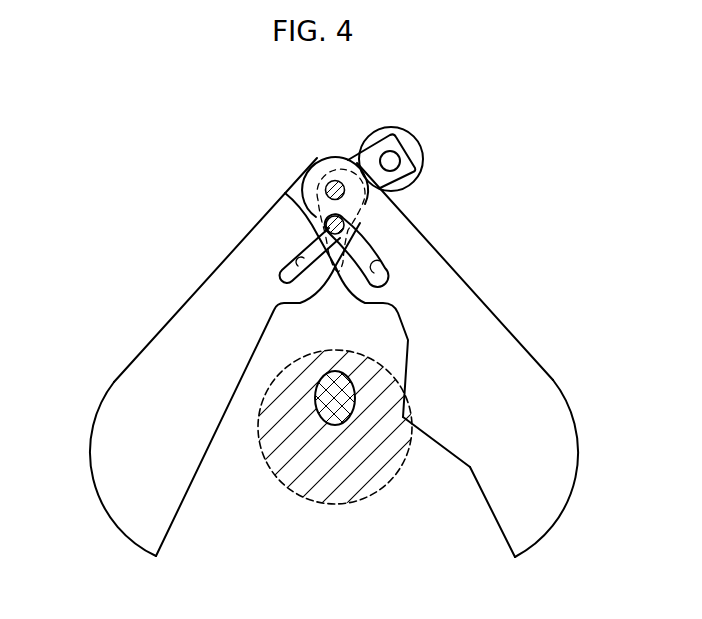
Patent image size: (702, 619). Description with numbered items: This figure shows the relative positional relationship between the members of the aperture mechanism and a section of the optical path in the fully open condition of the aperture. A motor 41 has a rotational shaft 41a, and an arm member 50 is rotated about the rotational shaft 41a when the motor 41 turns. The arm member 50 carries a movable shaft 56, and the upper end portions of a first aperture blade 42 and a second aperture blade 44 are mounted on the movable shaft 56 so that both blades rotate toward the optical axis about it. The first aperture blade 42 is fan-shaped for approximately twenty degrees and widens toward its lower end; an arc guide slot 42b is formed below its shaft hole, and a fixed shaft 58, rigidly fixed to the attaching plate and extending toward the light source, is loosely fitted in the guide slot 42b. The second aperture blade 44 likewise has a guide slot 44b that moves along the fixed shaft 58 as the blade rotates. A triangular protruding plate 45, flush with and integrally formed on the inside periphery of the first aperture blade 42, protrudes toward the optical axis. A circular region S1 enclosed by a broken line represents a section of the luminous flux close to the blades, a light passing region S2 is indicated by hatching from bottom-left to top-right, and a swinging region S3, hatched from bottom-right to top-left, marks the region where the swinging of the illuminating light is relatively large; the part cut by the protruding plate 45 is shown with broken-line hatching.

The motor 41 is at (423, 160).
The rotational shaft 41a is at (395, 169).
The first aperture blade 42 is at (537, 420).
The arc guide slot 42b is at (388, 275).
The second aperture blade 44 is at (142, 418).
The guide slot 44b is at (283, 274).
The protruding plate 45 is at (442, 428).
The arm member 50 is at (370, 163).
The movable shaft 56 is at (326, 185).
The fixed shaft 58 is at (325, 225).
The circular region S1 is at (278, 482).
The light passing region S2 is at (351, 487).
The swinging region S3 is at (317, 415).